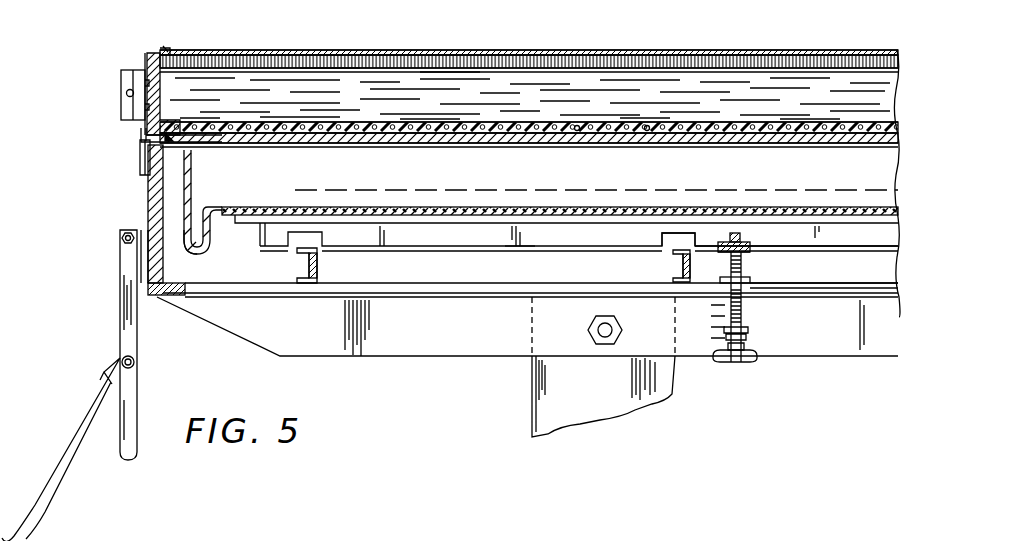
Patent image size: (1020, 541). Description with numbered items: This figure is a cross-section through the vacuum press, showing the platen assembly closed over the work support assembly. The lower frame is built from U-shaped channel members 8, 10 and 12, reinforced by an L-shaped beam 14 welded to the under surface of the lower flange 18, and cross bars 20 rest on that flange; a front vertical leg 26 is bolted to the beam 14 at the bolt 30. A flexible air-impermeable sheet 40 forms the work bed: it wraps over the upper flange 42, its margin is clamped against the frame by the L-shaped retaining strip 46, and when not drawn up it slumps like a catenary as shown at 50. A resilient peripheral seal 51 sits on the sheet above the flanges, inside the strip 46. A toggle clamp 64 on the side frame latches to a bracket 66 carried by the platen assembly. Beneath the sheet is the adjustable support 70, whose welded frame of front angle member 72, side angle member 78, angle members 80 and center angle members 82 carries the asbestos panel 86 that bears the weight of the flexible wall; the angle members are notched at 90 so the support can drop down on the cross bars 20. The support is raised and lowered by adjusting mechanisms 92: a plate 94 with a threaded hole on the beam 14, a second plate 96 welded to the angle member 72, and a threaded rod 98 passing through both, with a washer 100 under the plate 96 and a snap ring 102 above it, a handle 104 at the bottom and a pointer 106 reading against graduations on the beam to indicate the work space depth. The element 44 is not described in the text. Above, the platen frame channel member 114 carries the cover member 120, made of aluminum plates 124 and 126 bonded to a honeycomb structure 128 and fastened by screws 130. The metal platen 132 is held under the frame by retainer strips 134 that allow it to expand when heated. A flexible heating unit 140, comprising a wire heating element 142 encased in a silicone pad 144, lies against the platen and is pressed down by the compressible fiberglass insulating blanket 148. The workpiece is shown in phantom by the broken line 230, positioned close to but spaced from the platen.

The channel member 8 is at (336, 168).
The channel member 10 is at (165, 250).
The channel member 12 is at (768, 538).
The beam 14 is at (430, 345).
The lower flange 18 is at (172, 292).
The cross bar 20 is at (300, 262).
The front vertical leg 26 is at (550, 400).
The bolt 30 is at (588, 324).
The flexible sheet 40 is at (262, 207).
The upper flange 42 is at (172, 160).
The member 44 is at (598, 538).
The retaining strip 46 is at (140, 155).
The catenary slump 50 is at (187, 231).
The peripheral seal 51 is at (205, 141).
The toggle clamp 64 is at (124, 312).
The bracket 66 is at (128, 78).
The adjustable support 70 is at (520, 249).
The front angle member 72 is at (888, 254).
The side angle member 78 is at (720, 538).
The angle member 80 is at (794, 531).
The center angle member 82 is at (665, 538).
The panel 86 is at (598, 216).
The notch 90 is at (686, 237).
The adjusting mechanism 92 is at (758, 281).
The plate 94 is at (722, 279).
The second plate 96 is at (749, 245).
The threaded rod 98 is at (742, 312).
The washer 100 is at (745, 253).
The snap ring 102 is at (752, 244).
The handle 104 is at (748, 360).
The pointer element 106 is at (744, 334).
The channel member 114 is at (148, 60).
The cover member 120 is at (273, 50).
The aluminum plate 124 is at (325, 60).
The aluminum plate 126 is at (385, 68).
The honeycomb reinforcing structure 128 is at (448, 62).
The screw 130 is at (165, 50).
The metal platen 132 is at (438, 130).
The retainer strip 134 is at (145, 131).
The heating unit 140 is at (503, 123).
The heating element 142 is at (577, 126).
The pad 144 is at (647, 126).
The heat insulating blanket 148 is at (738, 95).
The workpiece 230 is at (460, 192).